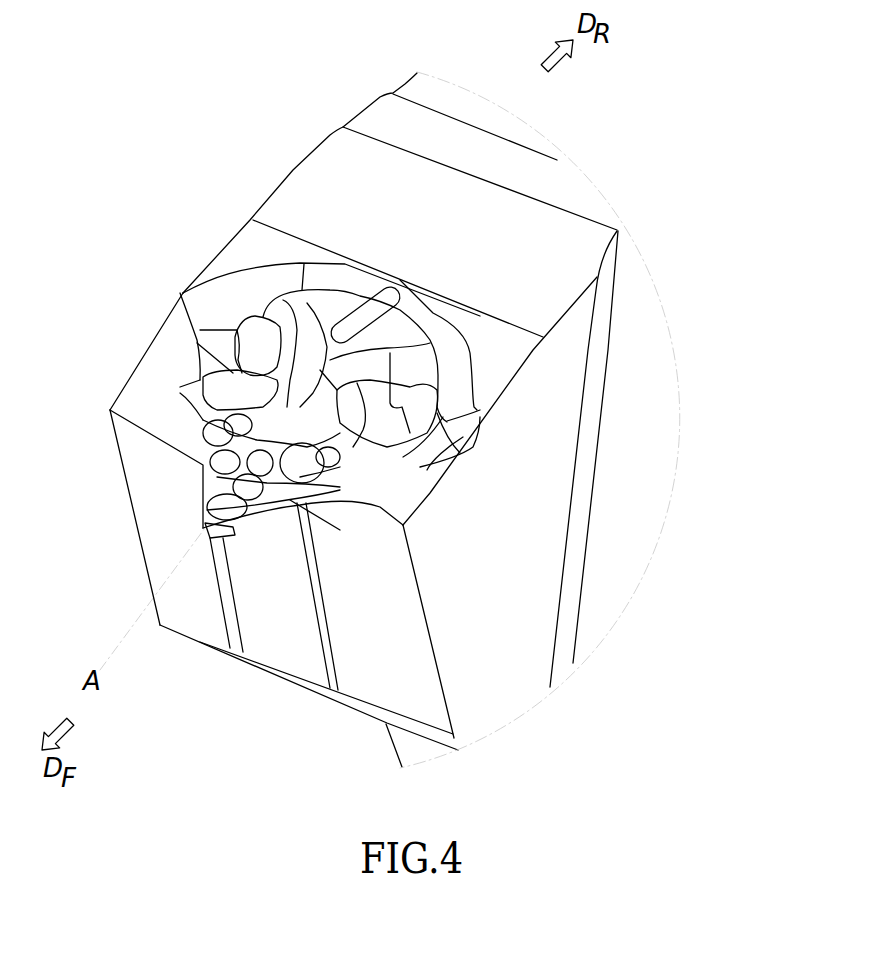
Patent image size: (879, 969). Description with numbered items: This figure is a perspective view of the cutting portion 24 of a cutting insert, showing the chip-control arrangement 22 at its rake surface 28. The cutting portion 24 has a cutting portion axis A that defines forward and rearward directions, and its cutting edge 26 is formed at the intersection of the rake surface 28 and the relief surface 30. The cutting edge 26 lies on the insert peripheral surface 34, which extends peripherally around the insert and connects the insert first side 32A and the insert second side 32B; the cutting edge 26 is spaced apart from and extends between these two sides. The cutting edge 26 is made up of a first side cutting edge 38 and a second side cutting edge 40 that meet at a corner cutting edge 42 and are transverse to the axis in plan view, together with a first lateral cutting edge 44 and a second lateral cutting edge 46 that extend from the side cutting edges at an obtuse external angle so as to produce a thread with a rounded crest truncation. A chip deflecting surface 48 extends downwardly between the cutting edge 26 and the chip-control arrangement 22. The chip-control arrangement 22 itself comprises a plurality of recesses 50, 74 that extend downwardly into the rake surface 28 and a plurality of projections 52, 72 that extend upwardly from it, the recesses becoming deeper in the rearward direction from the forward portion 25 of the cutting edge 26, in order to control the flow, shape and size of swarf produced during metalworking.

The chip-control arrangement 22 is at (180, 266).
The cutting portion 24 is at (662, 293).
The forward portion 25 is at (188, 549).
The cutting edge 26 is at (160, 457).
The rake surface 28 is at (398, 509).
The relief surface 30 is at (390, 570).
The insert first side 32A is at (633, 347).
The insert second side 32B is at (330, 131).
The insert peripheral surface 34 is at (542, 238).
The first side cutting edge 38 is at (250, 523).
The second side cutting edge 40 is at (200, 500).
The corner cutting edge 42 is at (215, 530).
The first lateral cutting edge 44 is at (307, 503).
The second lateral cutting edge 46 is at (202, 470).
The chip deflecting surface 48 is at (200, 520).
The recesses 50 is at (230, 373).
The projections 52 is at (213, 410).
The projection 72 is at (270, 520).
The recess 74 is at (200, 528).